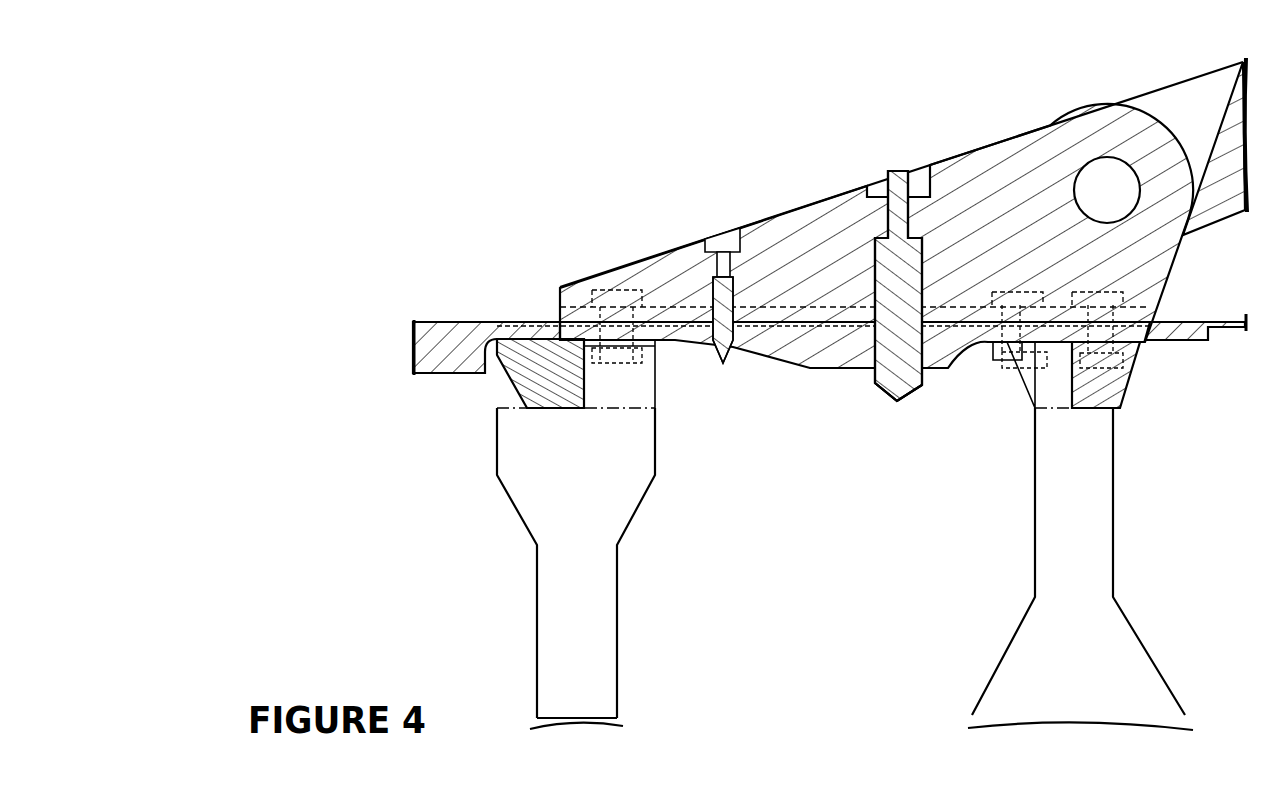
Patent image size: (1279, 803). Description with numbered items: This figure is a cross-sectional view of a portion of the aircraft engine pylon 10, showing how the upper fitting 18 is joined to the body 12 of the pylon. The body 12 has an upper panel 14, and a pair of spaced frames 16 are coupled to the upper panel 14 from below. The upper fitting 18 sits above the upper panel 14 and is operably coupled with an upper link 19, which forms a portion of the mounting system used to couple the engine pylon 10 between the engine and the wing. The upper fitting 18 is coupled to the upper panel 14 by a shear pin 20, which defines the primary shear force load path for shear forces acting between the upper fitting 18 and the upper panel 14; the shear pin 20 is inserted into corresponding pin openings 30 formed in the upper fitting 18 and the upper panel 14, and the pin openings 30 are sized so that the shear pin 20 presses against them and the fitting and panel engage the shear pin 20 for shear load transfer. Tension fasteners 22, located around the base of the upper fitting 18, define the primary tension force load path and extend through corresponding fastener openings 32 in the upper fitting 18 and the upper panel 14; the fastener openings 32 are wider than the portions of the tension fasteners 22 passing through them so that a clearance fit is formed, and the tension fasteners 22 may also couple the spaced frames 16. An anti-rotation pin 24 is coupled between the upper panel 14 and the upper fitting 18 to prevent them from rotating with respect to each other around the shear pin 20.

The engine pylon 10 is at (497, 128).
The body 12 is at (430, 318).
The upper panel 14 is at (481, 320).
The spaced frames 16 is at (558, 595).
The upper fitting 18 is at (1035, 118).
The upper link 19 is at (1238, 64).
The shear pin 20 is at (875, 262).
The tension fasteners 22 is at (606, 290).
The anti-rotation pin 24 is at (713, 288).
The pin openings 30 is at (900, 335).
The fastener openings 32 is at (655, 347).